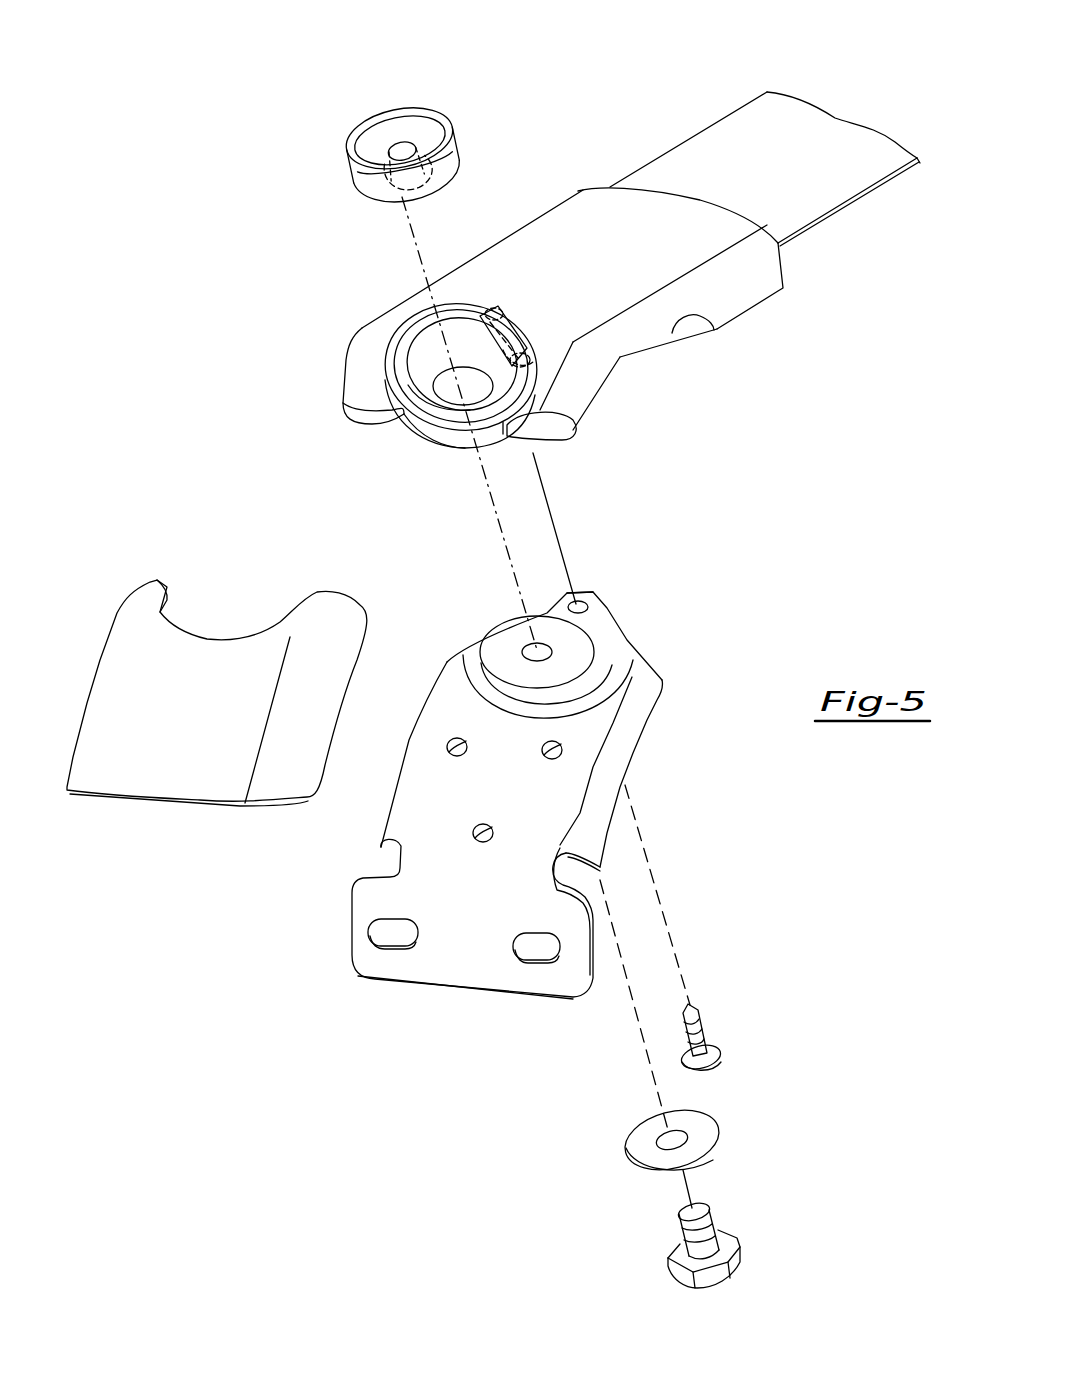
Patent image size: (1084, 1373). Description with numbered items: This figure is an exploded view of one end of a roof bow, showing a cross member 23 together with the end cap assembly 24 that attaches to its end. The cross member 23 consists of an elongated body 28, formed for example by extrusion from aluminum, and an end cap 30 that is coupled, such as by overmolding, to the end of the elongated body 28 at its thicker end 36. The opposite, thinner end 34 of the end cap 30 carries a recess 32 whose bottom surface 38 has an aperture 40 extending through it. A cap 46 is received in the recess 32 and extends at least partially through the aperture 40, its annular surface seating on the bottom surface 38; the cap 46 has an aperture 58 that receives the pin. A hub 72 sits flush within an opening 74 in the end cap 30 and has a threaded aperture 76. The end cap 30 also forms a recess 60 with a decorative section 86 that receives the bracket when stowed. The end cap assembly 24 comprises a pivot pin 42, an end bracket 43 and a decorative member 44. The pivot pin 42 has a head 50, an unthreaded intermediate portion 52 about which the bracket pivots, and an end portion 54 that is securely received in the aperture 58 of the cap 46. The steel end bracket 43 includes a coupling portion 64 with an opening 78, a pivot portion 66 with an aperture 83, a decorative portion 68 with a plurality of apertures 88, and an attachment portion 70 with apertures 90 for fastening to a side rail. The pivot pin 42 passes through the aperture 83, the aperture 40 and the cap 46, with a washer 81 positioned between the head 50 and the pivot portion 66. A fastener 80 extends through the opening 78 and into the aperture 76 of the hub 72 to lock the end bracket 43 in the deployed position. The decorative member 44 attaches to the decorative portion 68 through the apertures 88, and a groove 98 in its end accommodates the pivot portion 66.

The cross member 23 is at (818, 76).
The elongated body 28 is at (835, 122).
The end cap 30 is at (569, 212).
The end 36 is at (584, 188).
The decorative section 86 is at (664, 333).
The recess 60 is at (664, 398).
The end 34 is at (355, 387).
The recess 32 is at (451, 420).
The bottom surface 38 is at (434, 405).
The aperture 40 is at (452, 388).
The hub 72 is at (519, 330).
The opening 74 is at (545, 352).
The aperture 76 is at (498, 318).
The cap 46 is at (370, 142).
The aperture 58 is at (402, 195).
The decorative member 44 is at (162, 770).
The groove 98 is at (168, 598).
The end cap assembly 24 is at (668, 772).
The decorative portion 68 is at (447, 690).
The pivot portion 66 is at (600, 634).
The aperture 83 is at (543, 650).
The opening 78 is at (586, 606).
The coupling portion 64 is at (584, 598).
The apertures 88 is at (545, 758).
The end bracket 43 is at (438, 992).
The attachment portion 70 is at (573, 995).
The apertures 90 is at (385, 931).
The fastener 80 is at (700, 1032).
The washer 81 is at (705, 1142).
The pivot pin 42 is at (668, 1294).
The end portion 54 is at (680, 1230).
The head 50 is at (733, 1258).
The intermediate portion 52 is at (670, 1260).